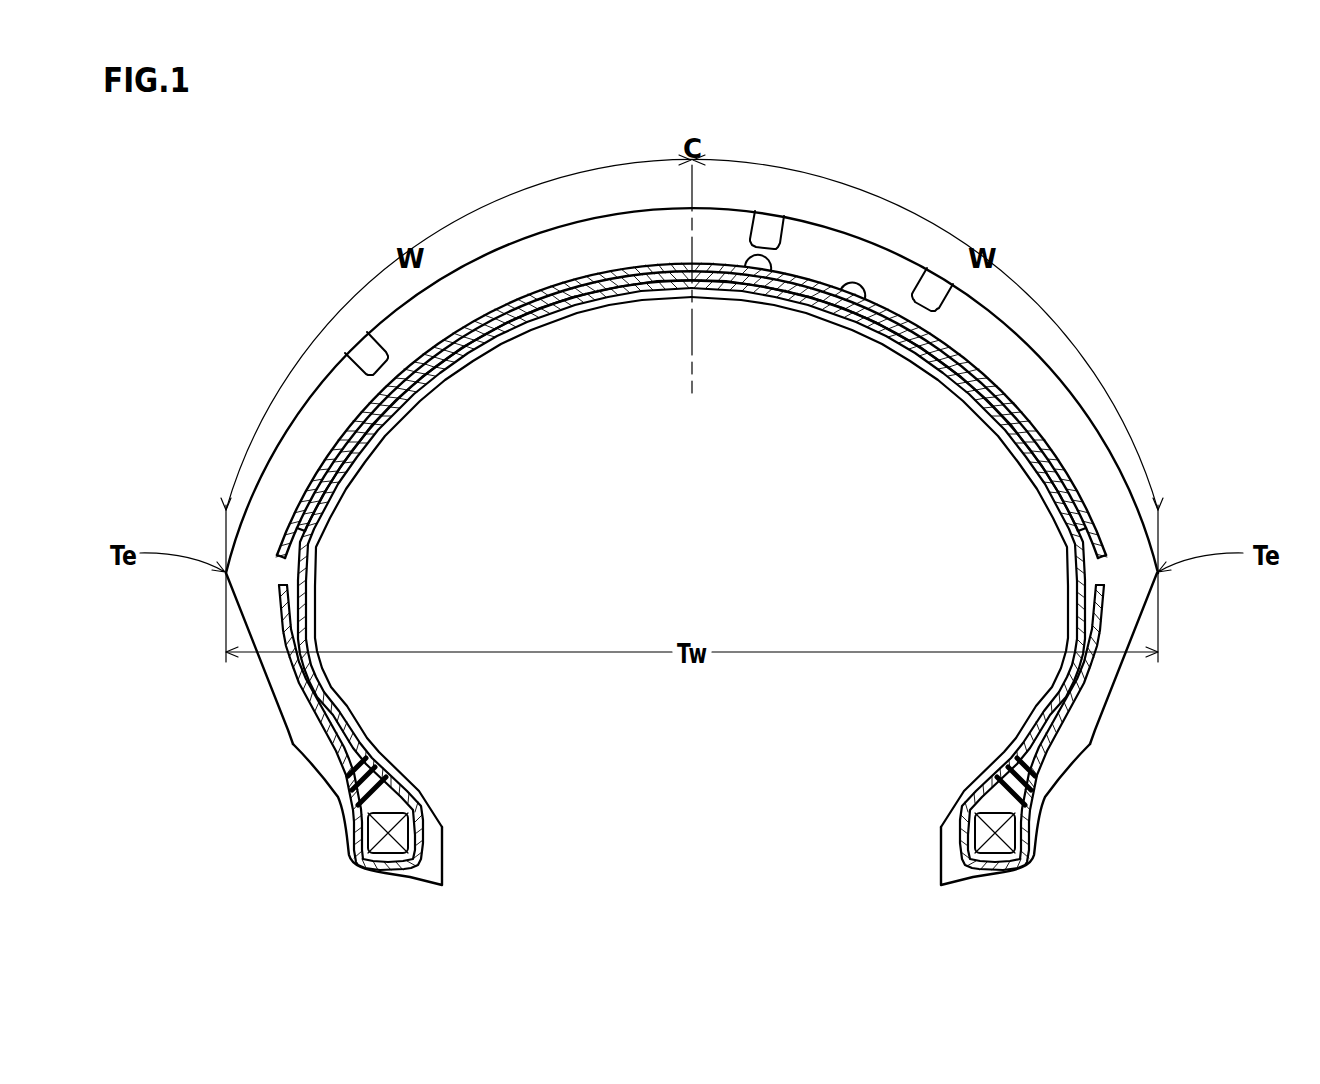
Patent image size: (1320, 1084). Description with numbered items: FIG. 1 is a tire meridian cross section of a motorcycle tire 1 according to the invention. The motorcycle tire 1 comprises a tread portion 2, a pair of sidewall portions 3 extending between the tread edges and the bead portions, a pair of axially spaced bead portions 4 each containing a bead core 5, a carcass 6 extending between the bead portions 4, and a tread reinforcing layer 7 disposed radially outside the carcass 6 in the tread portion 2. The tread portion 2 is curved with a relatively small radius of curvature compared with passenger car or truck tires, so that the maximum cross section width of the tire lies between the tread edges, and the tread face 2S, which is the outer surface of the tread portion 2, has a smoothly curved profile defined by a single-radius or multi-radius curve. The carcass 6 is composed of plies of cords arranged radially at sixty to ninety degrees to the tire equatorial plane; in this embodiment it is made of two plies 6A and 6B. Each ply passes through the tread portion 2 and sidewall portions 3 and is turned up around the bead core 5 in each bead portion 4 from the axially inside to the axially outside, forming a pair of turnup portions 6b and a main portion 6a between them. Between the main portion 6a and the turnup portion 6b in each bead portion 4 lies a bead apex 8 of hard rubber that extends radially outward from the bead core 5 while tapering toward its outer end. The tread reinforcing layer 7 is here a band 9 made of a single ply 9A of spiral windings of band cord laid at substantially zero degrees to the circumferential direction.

The motorcycle tire 1 is at (1136, 365).
The tread portion 2 is at (692, 390).
The tread face 2S is at (1023, 348).
The sidewall portion 3 is at (245, 693).
The bead portion 4 is at (284, 782).
The bead core 5 is at (403, 833).
The carcass 6 is at (918, 485).
The carcass ply 6A is at (1033, 480).
The carcass ply 6B is at (1082, 522).
The main portion 6a is at (1027, 728).
The turnup portion 6b is at (1045, 757).
The tread reinforcing layer 7 is at (868, 290).
The bead apex 8 is at (975, 780).
The band 9 is at (773, 265).
The ply 9A is at (758, 262).